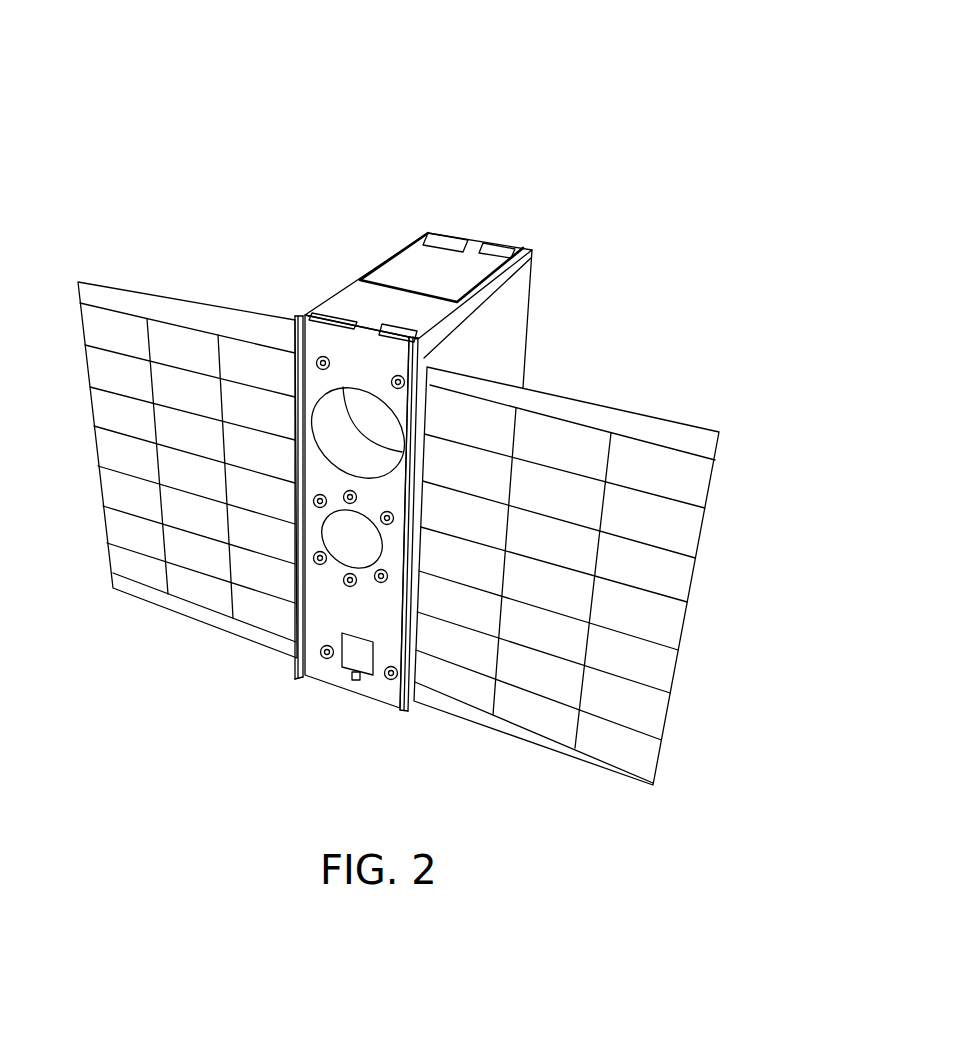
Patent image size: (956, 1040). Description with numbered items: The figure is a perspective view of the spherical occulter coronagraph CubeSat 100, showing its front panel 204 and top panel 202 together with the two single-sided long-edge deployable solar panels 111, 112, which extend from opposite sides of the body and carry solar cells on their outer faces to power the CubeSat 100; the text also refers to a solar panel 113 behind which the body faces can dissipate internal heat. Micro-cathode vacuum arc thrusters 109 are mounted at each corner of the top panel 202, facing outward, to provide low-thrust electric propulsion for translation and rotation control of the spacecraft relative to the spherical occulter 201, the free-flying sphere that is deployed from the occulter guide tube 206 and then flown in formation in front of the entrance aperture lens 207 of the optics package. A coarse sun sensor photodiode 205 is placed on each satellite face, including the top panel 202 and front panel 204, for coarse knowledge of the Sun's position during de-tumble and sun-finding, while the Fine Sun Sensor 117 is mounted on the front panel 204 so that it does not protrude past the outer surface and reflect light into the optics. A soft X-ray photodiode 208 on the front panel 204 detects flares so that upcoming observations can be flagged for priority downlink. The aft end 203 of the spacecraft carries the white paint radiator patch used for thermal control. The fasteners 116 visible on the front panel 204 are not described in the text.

The spherical occulter coronagraph CubeSat 100 is at (634, 98).
The deployable solar panel 111 is at (117, 302).
The deployable solar panel 112 is at (548, 437).
The micro-cathode vacuum arc thruster 109 is at (329, 311).
The solar panel 113 is at (455, 265).
The fasteners 116 is at (382, 582).
The Fine Sun Sensor 117 is at (348, 656).
The spherical occulter 201 is at (362, 413).
The top panel 202 is at (358, 280).
The aft end 203 is at (525, 330).
The front panel 204 is at (314, 342).
The coarse sun sensor photodiode 205 is at (509, 246).
The occulter guide tube 206 is at (342, 452).
The entrance aperture lens 207 is at (382, 550).
The soft X-ray photodiode 208 is at (357, 681).